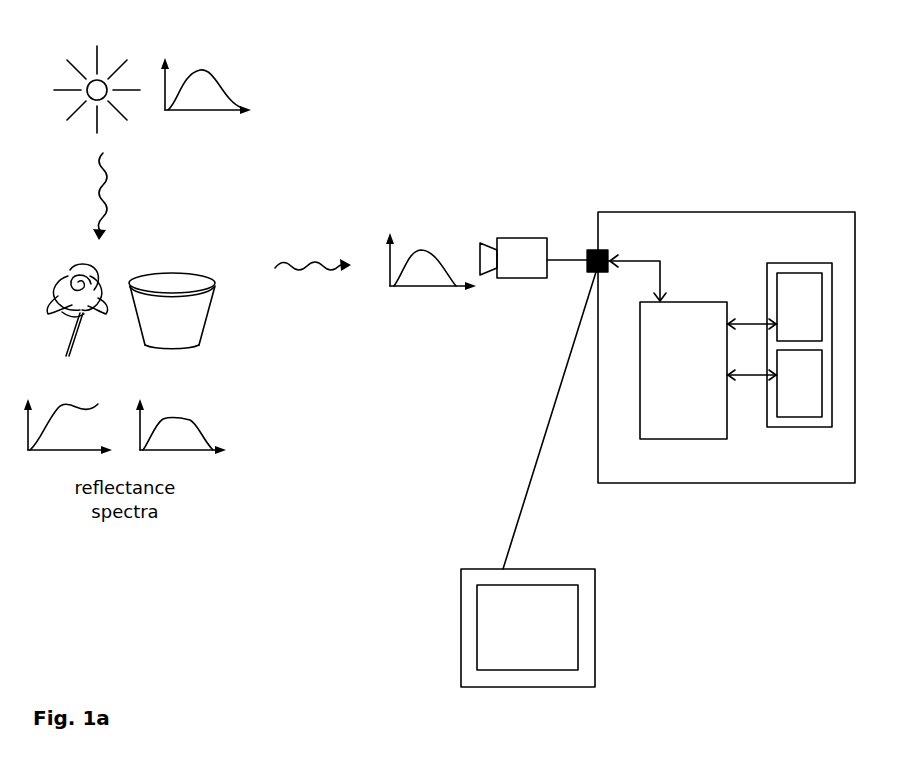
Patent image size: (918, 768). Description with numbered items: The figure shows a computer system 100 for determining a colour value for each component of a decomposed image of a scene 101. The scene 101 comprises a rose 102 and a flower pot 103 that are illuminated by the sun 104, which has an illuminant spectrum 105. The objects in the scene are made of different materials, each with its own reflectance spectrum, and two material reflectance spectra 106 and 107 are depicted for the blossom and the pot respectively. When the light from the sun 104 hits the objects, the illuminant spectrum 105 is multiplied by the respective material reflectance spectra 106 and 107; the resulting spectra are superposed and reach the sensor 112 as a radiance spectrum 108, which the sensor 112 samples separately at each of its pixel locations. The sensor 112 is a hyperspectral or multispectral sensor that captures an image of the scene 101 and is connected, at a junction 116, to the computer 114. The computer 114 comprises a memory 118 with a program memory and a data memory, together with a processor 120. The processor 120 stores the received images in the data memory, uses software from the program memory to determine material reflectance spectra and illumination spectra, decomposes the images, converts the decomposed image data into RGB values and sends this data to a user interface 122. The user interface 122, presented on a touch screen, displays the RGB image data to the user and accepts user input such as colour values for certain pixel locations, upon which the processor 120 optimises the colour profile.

The computer system 100 is at (773, 126).
The scene 101 is at (242, 336).
The rose 102 is at (67, 267).
The flower pot 103 is at (211, 276).
The sun 104 is at (113, 57).
The illuminant spectrum 105 is at (205, 62).
The material reflectance spectrum 106 is at (58, 406).
The material reflectance spectrum 107 is at (181, 420).
The radiance spectrum 108 is at (425, 251).
The sensor 112 is at (522, 279).
The computer 114 is at (740, 484).
The interface junction 116 is at (596, 250).
The memory 118 is at (806, 262).
The processor 120 is at (675, 440).
The user interface 122 is at (596, 645).